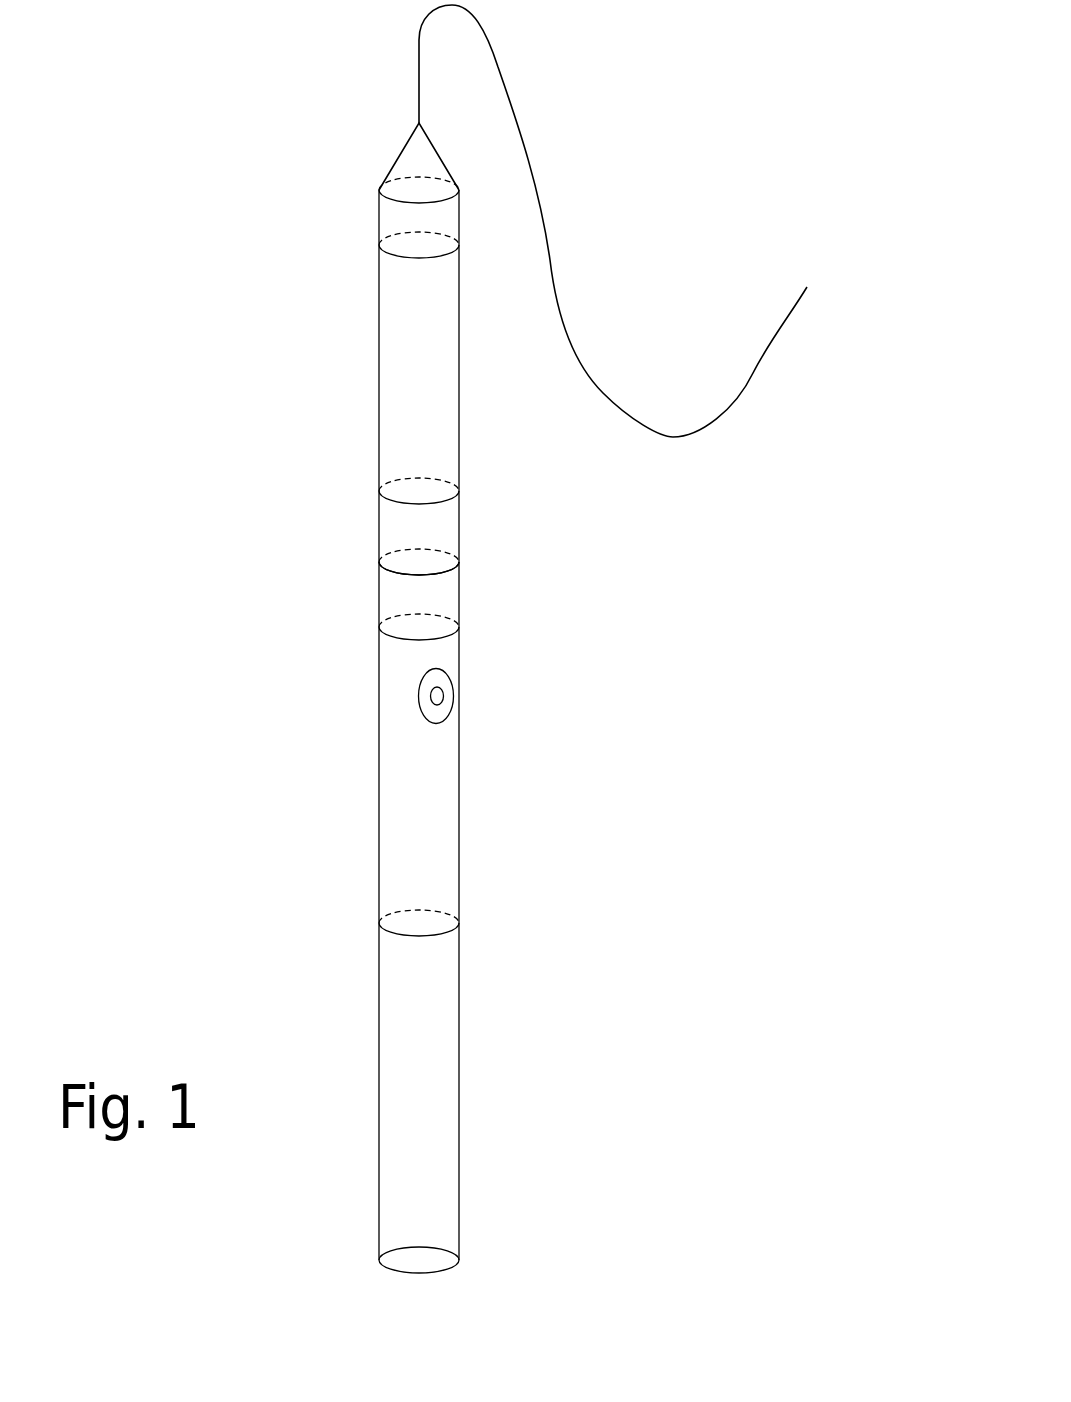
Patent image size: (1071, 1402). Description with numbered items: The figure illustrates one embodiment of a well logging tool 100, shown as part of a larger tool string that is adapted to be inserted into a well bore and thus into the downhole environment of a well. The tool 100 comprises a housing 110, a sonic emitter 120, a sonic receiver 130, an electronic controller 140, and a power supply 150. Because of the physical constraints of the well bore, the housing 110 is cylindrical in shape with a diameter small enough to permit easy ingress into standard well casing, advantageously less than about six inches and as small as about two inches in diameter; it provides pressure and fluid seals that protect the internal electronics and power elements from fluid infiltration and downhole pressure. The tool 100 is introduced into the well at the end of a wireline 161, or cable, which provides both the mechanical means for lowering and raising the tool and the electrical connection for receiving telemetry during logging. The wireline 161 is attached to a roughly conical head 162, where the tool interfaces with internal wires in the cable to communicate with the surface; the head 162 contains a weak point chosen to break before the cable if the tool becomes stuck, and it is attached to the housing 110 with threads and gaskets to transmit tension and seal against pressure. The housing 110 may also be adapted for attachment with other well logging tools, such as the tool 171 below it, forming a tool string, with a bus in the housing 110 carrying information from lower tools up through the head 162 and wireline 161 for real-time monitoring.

The well logging tool 100 is at (193, 160).
The housing 110 is at (459, 748).
The sonic emitter 120 is at (437, 693).
The sonic receiver 130 is at (435, 666).
The electronic controller 140 is at (445, 593).
The power supply 150 is at (445, 530).
The wireline 161 is at (508, 88).
The head 162 is at (397, 158).
The tool 171 is at (437, 1128).